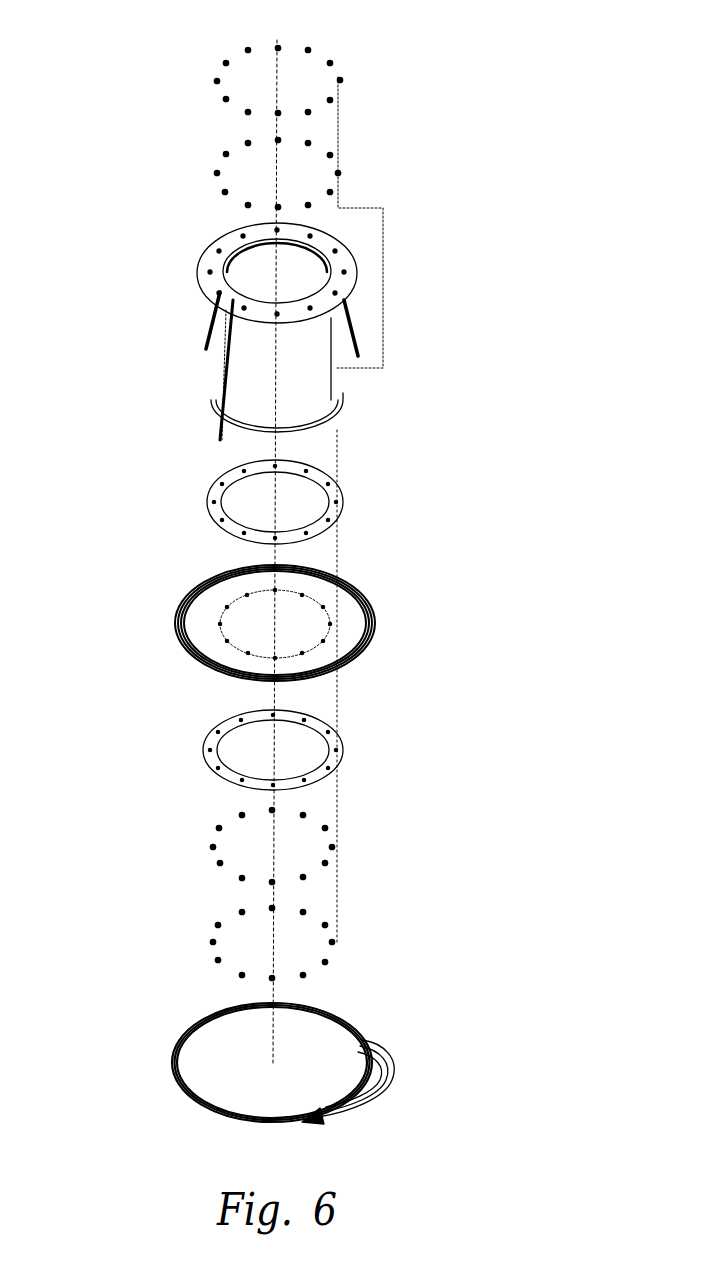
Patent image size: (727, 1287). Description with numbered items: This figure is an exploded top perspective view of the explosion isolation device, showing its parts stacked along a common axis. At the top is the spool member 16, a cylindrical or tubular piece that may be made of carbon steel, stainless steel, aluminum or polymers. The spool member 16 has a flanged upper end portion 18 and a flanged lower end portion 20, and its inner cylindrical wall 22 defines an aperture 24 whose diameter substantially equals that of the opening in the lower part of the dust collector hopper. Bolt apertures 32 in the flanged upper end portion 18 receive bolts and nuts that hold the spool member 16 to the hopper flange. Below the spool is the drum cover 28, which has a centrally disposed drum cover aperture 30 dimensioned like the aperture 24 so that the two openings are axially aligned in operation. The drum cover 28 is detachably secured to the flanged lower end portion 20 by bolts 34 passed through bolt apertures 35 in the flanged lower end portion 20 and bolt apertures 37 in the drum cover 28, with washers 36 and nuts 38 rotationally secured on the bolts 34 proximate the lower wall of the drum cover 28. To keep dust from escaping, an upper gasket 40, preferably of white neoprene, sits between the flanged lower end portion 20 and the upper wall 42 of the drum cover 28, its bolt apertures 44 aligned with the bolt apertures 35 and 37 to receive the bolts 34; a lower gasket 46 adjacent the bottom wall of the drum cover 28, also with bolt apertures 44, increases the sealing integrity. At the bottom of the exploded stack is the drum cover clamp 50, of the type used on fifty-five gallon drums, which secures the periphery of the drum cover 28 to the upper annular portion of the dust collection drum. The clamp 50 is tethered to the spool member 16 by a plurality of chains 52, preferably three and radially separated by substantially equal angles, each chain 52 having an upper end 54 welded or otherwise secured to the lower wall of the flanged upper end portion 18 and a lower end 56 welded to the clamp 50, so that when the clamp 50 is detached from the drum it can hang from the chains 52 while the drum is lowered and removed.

The spool member 16 is at (440, 313).
The flanged upper end portion 18 is at (207, 272).
The flanged lower end portion 20 is at (343, 437).
The inner cylindrical wall 22 is at (245, 260).
The aperture 24 is at (293, 288).
The drum cover 28 is at (375, 622).
The drum cover aperture 30 is at (248, 627).
The bolt apertures 32 is at (210, 292).
The bolts 34 is at (217, 78).
The bolt apertures 35 is at (203, 447).
The washers 36 is at (217, 172).
The bolt apertures 37 is at (220, 608).
The nuts 38 is at (213, 942).
The upper gasket 40 is at (352, 517).
The upper wall 42 is at (348, 641).
The bolt apertures 44 is at (223, 482).
The lower gasket 46 is at (210, 733).
The drum cover clamp 50 is at (343, 1017).
The chains 52 is at (205, 340).
The upper end 54 is at (350, 300).
The lower end 56 is at (362, 355).